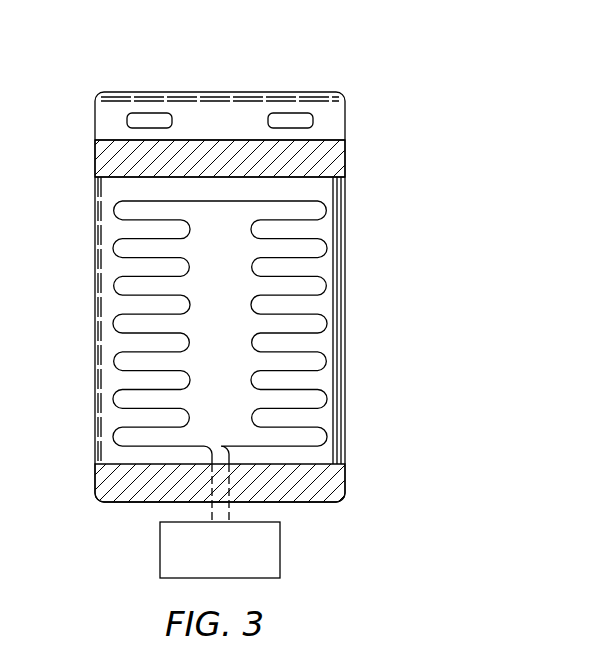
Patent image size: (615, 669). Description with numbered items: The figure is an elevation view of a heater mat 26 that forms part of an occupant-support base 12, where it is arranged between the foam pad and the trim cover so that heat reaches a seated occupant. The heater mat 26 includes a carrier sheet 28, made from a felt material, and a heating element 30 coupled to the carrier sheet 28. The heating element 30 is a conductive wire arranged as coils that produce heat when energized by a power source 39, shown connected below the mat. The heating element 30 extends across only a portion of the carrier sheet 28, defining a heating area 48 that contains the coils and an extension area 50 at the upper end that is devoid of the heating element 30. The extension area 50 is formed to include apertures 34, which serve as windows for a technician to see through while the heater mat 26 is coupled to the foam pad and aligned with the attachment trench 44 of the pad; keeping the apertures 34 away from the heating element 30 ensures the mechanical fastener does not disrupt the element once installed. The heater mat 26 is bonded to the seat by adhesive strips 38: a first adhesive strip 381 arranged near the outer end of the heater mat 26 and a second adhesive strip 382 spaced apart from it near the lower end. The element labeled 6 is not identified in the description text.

The heater mat 26 is at (367, 93).
The carrier sheet 28 is at (345, 118).
The heating element 30 is at (320, 232).
The apertures 34 is at (147, 113).
The adhesive strips 38 is at (405, 463).
The first adhesive strip 381 is at (330, 156).
The second adhesive strip 382 is at (333, 479).
The power source 39 is at (280, 550).
The attachment trench 44 is at (217, 92).
The heating area 48 is at (91, 220).
The extension area 50 is at (91, 127).
The occupant-support base 12 is at (0, 165).
The mattress 6 is at (5, 252).